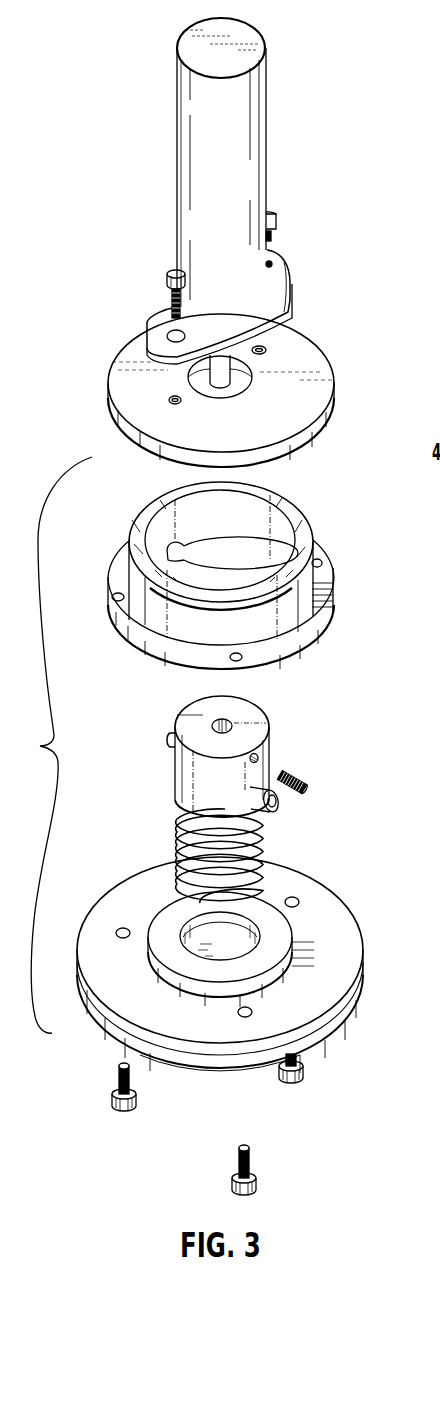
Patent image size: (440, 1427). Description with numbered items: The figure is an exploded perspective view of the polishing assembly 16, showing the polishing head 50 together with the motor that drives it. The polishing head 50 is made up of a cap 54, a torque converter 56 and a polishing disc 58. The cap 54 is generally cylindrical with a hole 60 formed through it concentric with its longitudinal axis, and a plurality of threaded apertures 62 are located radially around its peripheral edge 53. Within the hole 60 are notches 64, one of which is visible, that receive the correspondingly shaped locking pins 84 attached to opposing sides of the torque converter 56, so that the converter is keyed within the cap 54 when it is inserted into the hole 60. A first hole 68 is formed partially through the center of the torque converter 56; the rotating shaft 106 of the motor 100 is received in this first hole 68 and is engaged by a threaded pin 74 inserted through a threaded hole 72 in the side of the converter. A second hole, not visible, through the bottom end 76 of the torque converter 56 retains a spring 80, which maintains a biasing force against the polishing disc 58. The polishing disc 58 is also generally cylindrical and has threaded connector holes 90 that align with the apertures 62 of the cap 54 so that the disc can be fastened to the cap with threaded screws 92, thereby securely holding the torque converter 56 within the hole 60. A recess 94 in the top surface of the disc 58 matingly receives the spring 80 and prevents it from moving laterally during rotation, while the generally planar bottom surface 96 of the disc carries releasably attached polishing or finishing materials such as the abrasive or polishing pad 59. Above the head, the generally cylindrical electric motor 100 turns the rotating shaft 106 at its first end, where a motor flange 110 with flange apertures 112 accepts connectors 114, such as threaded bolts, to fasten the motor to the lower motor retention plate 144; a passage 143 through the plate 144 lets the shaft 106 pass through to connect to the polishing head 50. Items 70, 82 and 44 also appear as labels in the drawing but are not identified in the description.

The polishing assembly 16 is at (94, 1081).
The polishing head 50 is at (56, 745).
The peripheral edge 53 is at (325, 610).
The cap 54 is at (215, 580).
The torque converter 56 is at (227, 763).
The polishing disc 58 is at (237, 976).
The polishing pad 59 is at (332, 1047).
The hole 60 is at (190, 503).
The apertures 62 is at (112, 598).
The notches 64 is at (223, 553).
The first hole 68 is at (220, 721).
The top face 70 is at (182, 730).
The threaded hole 72 is at (259, 757).
The threaded pin 74 is at (303, 778).
The bottom end 76 is at (185, 808).
The spring 80 is at (265, 848).
The pin 82 is at (252, 810).
The locking pins 84 is at (168, 740).
The connector holes 90 is at (300, 902).
The screws 92 is at (137, 1105).
The recess 94 is at (246, 945).
The bottom surface 96 is at (115, 1037).
The electric motor 100 is at (164, 131).
The rotating shaft 106 is at (260, 390).
The motor flange 110 is at (162, 322).
The flange apertures 112 is at (147, 342).
The connectors 114 is at (176, 272).
The passage 143 is at (240, 370).
The lower motor retention plate 144 is at (295, 409).
The shaft 44 is at (433, 629).